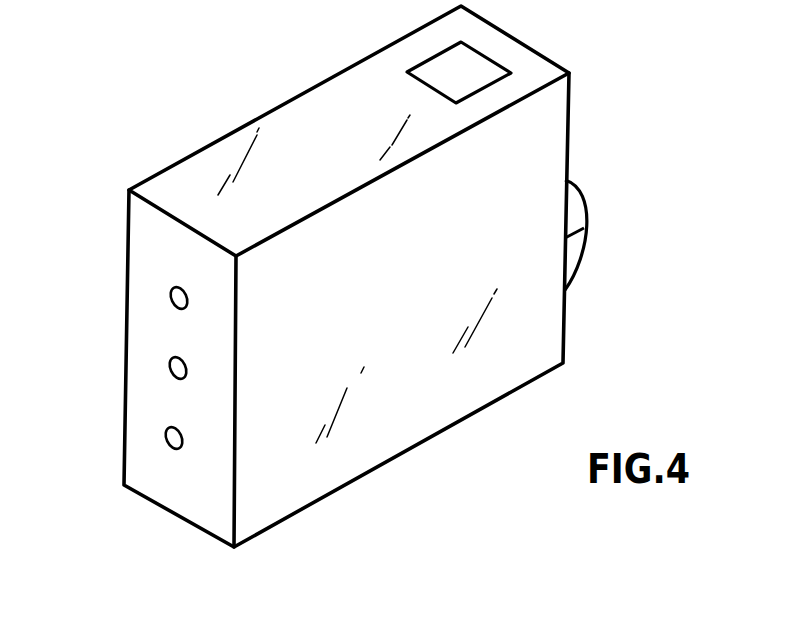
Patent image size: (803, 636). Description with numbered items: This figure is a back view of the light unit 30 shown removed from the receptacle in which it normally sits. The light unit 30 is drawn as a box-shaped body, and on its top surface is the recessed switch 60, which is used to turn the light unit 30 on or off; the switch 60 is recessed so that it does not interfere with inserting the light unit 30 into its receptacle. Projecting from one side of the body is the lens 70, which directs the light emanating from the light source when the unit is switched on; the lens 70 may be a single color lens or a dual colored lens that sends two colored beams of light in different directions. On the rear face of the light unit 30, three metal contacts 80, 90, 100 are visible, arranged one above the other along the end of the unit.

The light unit 30 is at (175, 106).
The recessed switch 60 is at (473, 58).
The lens 70 is at (586, 208).
The metal contact 80 is at (169, 290).
The metal contact 90 is at (169, 363).
The metal contact 100 is at (165, 434).